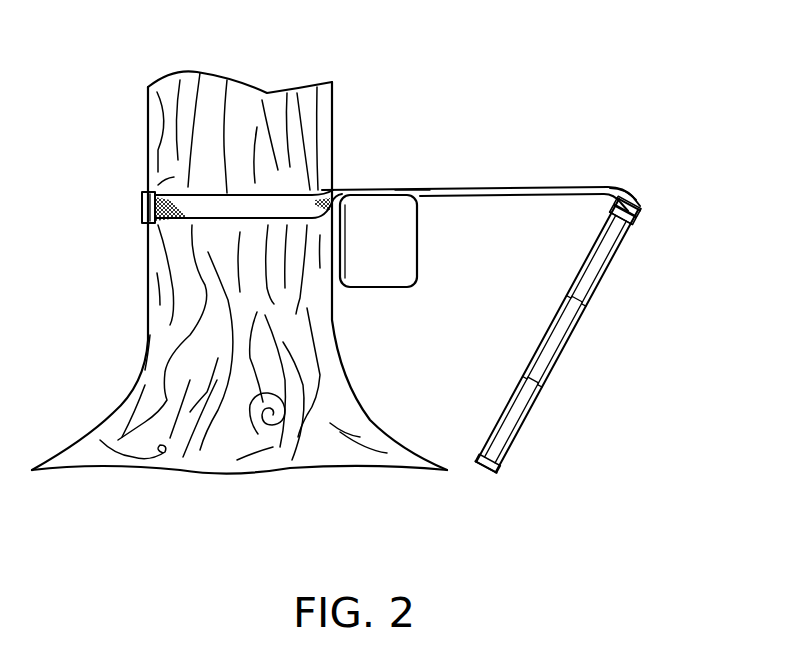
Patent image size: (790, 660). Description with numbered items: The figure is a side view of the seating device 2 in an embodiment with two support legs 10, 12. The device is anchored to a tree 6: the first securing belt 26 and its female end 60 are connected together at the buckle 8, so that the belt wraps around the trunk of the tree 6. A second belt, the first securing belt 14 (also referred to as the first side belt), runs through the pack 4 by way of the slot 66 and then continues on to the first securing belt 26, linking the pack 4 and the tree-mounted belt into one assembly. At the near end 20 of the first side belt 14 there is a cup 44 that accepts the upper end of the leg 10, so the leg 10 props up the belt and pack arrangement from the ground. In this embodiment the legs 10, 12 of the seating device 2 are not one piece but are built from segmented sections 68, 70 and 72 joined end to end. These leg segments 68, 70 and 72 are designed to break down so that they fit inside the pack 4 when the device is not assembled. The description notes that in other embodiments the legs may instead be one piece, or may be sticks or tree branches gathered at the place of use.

The seating device 2 is at (463, 116).
The pack 4 is at (390, 288).
The tree 6 is at (167, 128).
The buckle 8 is at (141, 208).
The support leg 10 is at (567, 373).
The support leg 12 is at (480, 470).
The first securing belt (first side belt) 14 is at (520, 187).
The near end 20 is at (640, 197).
The first securing belt 26 is at (285, 207).
The cup 44 is at (636, 208).
The female end 60 is at (155, 223).
The slot 66 is at (412, 190).
The segmented section (leg segment) 68 is at (602, 272).
The segmented section (leg segment) 70 is at (560, 345).
The segmented section (leg segment) 72 is at (520, 427).